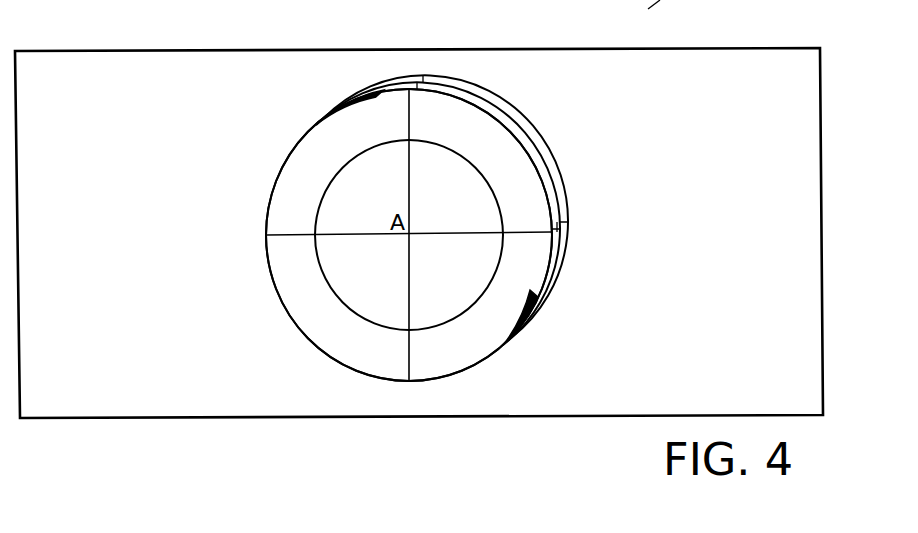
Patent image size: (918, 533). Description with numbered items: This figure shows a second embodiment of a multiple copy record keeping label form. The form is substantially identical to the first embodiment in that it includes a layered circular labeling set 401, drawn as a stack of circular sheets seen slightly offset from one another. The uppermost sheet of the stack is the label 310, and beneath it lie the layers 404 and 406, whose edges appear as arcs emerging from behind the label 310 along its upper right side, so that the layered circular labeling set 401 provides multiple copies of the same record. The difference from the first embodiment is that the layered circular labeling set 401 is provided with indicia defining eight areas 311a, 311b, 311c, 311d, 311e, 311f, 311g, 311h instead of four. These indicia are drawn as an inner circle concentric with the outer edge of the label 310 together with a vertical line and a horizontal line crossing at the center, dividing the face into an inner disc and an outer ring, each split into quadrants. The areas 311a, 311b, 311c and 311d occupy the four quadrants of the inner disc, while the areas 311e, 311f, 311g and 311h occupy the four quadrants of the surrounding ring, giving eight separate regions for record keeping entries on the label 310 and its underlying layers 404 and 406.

The label 310 is at (313, 345).
The area 311a is at (350, 215).
The area 311b is at (427, 167).
The area 311c is at (465, 260).
The area 311d is at (380, 298).
The area 311e is at (302, 153).
The area 311f is at (515, 207).
The area 311g is at (483, 328).
The area 311h is at (317, 290).
The layered circular labeling set 401 is at (589, 292).
The layer 404 is at (508, 110).
The layer 406 is at (557, 150).